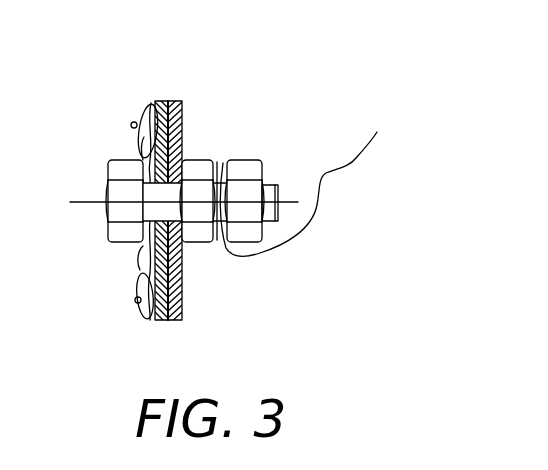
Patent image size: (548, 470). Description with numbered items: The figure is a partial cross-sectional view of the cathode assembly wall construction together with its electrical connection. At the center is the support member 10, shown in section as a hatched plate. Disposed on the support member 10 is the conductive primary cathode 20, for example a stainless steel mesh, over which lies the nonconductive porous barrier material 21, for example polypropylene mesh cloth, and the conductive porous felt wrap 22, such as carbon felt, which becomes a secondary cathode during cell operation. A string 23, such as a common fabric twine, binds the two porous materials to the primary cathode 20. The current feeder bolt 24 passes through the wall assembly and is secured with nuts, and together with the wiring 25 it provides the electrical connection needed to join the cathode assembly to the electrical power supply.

The support member 10 is at (183, 118).
The conductive primary cathode 20 is at (158, 320).
The nonconductive porous barrier material 21 is at (164, 102).
The conductive porous felt wrap 22 is at (155, 112).
The string 23 is at (131, 124).
The current feeder bolt 24 is at (268, 180).
The wiring 25 is at (353, 163).